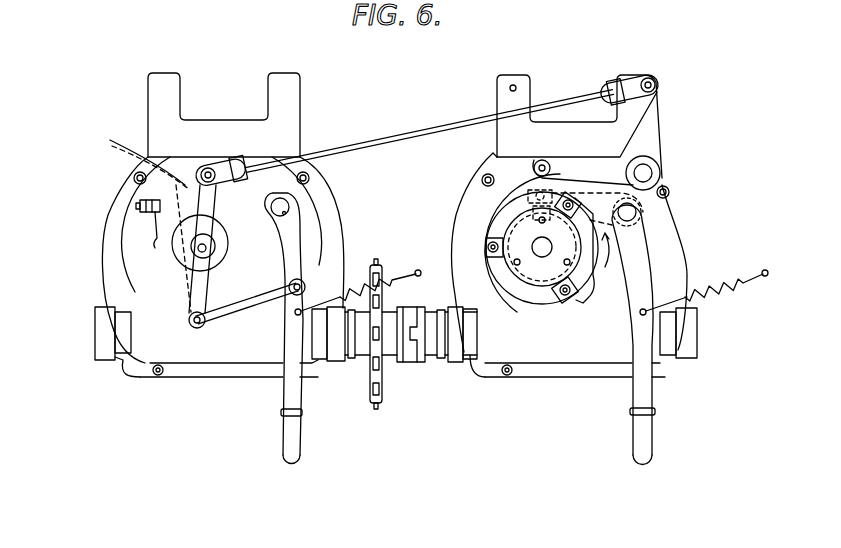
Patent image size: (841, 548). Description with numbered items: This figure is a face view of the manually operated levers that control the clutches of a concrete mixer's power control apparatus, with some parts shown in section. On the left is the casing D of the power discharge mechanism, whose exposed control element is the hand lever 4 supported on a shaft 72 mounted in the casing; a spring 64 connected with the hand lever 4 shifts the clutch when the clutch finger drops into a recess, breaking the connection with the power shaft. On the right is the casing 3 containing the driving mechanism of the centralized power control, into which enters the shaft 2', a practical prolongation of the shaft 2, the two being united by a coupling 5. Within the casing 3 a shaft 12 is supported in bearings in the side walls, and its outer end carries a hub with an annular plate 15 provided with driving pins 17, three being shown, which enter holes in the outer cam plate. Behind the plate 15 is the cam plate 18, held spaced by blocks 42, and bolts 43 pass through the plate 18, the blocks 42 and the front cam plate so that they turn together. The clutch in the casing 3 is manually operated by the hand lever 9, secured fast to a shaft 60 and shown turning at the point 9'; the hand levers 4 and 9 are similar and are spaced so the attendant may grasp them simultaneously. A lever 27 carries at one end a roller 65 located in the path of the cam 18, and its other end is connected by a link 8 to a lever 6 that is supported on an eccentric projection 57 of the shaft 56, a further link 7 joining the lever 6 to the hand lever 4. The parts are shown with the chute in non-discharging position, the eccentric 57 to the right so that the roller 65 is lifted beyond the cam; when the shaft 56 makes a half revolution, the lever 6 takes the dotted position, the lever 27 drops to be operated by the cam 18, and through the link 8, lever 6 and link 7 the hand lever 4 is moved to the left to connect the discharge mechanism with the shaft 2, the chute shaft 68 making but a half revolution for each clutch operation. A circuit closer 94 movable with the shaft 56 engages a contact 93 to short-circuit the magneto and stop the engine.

The casing D is at (157, 347).
The shaft 2 is at (336, 382).
The shaft 2' is at (430, 389).
The casing 3 is at (684, 246).
The hand lever 4 is at (280, 452).
The coupling 5 is at (405, 362).
The lever 6 is at (110, 141).
The link 7 is at (219, 335).
The link 8 is at (413, 128).
The hand lever 9 is at (657, 348).
The pivot 9' is at (613, 181).
The shaft 12 is at (542, 258).
The annular plate 15 is at (527, 275).
The driving pin 17 is at (490, 235).
The cam plate 18 is at (581, 240).
The lever 27 is at (652, 130).
The blocks 42 is at (540, 220).
The bolts 43 is at (488, 247).
The shaft 56 is at (189, 253).
The eccentric projection 57 is at (185, 268).
The shaft 60 is at (677, 193).
The spring 64 is at (350, 293).
The roller 65 is at (543, 158).
The shaft 68 is at (713, 295).
The shaft 72 is at (287, 208).
The contact 93 is at (150, 222).
The circuit closer 94 is at (173, 240).